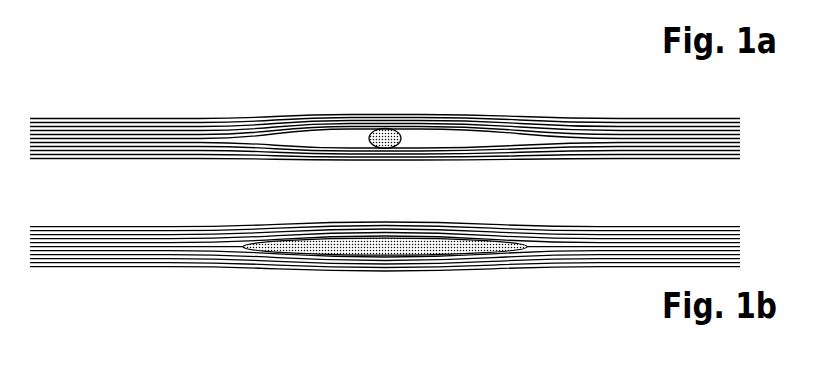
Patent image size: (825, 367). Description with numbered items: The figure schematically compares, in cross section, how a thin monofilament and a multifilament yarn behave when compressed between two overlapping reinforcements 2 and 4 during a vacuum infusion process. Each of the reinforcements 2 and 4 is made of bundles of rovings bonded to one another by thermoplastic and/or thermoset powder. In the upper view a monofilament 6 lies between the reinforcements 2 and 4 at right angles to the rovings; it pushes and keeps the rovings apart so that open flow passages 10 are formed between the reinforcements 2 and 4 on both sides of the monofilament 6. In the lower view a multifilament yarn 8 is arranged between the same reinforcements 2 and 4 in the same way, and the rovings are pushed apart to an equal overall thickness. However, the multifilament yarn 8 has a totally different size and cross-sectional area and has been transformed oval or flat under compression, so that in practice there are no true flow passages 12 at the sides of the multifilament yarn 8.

In FIG. 1A, the reinforcement 2 is at (295, 119).
In FIG. 1B, the reinforcement 2 is at (538, 233).
In FIG. 1A, the reinforcement 4 is at (284, 160).
In FIG. 1B, the reinforcement 4 is at (271, 268).
In FIG. 1A, the monofilament 6 is at (383, 117).
In FIG. 1B, the multifilament yarn 8 is at (355, 268).
In FIG. 1A, the open flow passages 10 is at (340, 142).
In FIG. 1B, the flow passages 12 is at (525, 266).